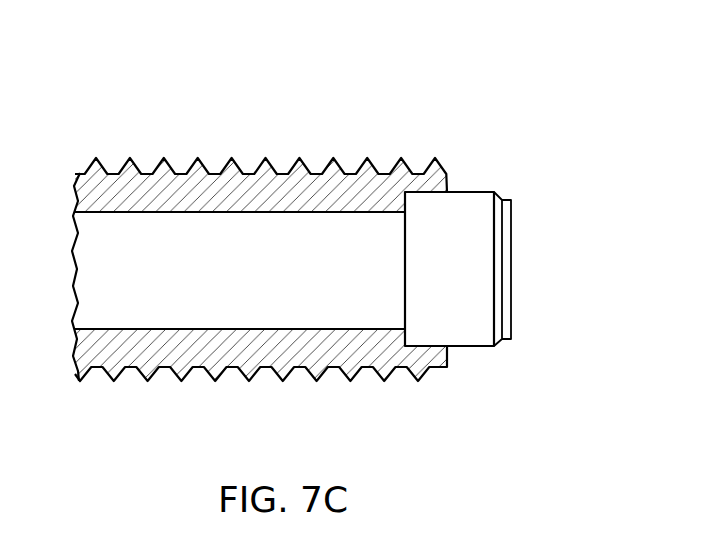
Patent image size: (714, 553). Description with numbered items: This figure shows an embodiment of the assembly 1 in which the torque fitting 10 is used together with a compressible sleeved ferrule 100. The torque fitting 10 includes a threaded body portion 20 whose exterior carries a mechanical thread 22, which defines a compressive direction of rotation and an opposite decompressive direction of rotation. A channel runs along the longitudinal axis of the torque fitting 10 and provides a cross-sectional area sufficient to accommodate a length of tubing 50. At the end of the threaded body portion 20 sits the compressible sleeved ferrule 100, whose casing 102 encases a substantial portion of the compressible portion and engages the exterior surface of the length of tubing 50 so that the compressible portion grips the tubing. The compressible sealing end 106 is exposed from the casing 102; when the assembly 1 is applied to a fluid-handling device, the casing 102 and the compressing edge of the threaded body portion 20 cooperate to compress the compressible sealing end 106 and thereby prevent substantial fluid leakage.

The assembly 1 is at (400, 107).
The torque fitting 10 is at (167, 410).
The threaded body portion 20 is at (178, 140).
The mechanical thread 22 is at (326, 377).
The length of tubing 50 is at (322, 224).
The compressible sleeved ferrule 100 is at (475, 164).
The casing 102 is at (466, 340).
The compressible sealing end 106 is at (505, 222).